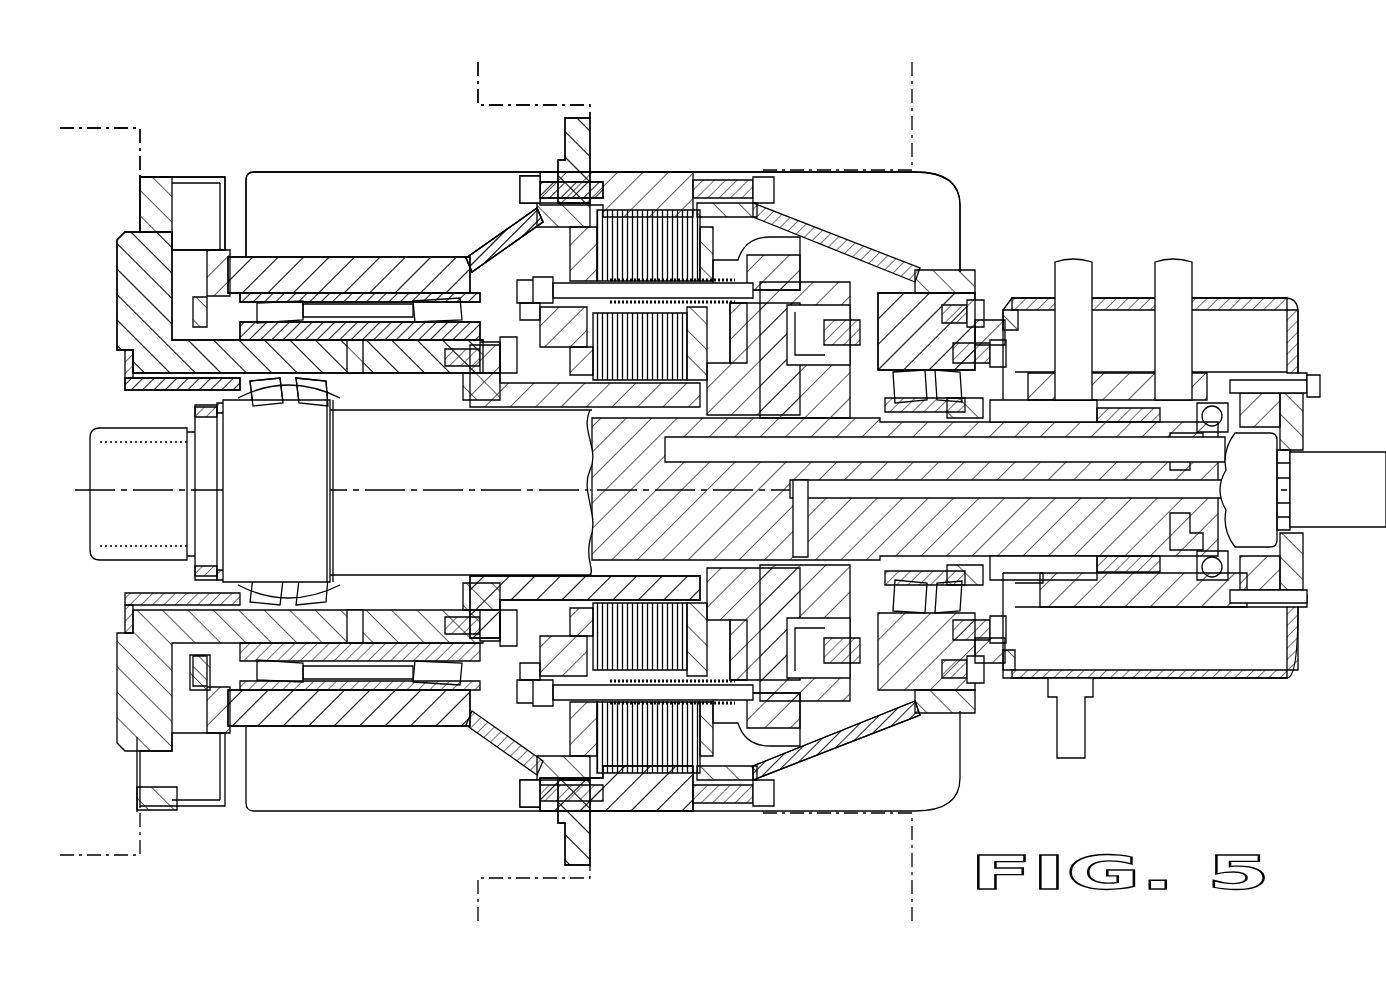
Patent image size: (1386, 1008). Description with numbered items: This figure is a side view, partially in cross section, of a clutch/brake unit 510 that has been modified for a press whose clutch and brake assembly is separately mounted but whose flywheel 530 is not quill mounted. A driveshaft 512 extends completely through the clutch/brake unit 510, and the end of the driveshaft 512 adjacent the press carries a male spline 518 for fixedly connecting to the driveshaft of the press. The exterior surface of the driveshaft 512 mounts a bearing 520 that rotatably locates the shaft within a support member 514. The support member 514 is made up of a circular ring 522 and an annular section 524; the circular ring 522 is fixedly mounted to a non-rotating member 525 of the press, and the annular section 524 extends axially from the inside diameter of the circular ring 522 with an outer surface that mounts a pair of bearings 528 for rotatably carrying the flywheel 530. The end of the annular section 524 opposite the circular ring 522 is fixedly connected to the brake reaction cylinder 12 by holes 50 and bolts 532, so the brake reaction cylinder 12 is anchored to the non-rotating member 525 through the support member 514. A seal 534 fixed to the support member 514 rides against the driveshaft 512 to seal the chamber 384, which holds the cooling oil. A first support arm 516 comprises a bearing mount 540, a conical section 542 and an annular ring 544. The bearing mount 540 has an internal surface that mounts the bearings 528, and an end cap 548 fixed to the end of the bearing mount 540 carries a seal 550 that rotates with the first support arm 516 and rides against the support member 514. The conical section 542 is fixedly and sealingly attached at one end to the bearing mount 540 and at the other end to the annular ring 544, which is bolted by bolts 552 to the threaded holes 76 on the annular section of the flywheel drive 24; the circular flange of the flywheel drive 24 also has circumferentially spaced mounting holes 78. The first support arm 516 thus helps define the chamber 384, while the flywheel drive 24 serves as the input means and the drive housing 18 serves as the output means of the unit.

The brake reaction cylinder 12 is at (407, 585).
The drive housing 18 is at (852, 378).
The flywheel drive 24 is at (676, 790).
The holes 50 is at (468, 722).
The threaded holes 76 is at (580, 788).
The mounting holes 78 is at (592, 140).
The chamber 384 is at (806, 735).
The clutch/brake unit 510 is at (1122, 174).
The driveshaft 512 is at (365, 560).
The support member 514 is at (132, 268).
The first support arm 516 is at (494, 236).
The male spline 518 is at (133, 567).
The bearing 520 is at (302, 400).
The circular ring 522 is at (128, 323).
The annular section 524 is at (287, 402).
The non-rotating member 525 is at (124, 128).
The pair of bearings 528 is at (278, 300).
The flywheel 530 is at (478, 63).
The bolts 532 is at (508, 612).
The seal 534 is at (118, 384).
The bearing mount 540 is at (372, 262).
The conical section 542 is at (480, 252).
The annular ring 544 is at (545, 178).
The end cap 548 is at (215, 700).
The seal 550 is at (200, 660).
The bolts 552 is at (520, 812).